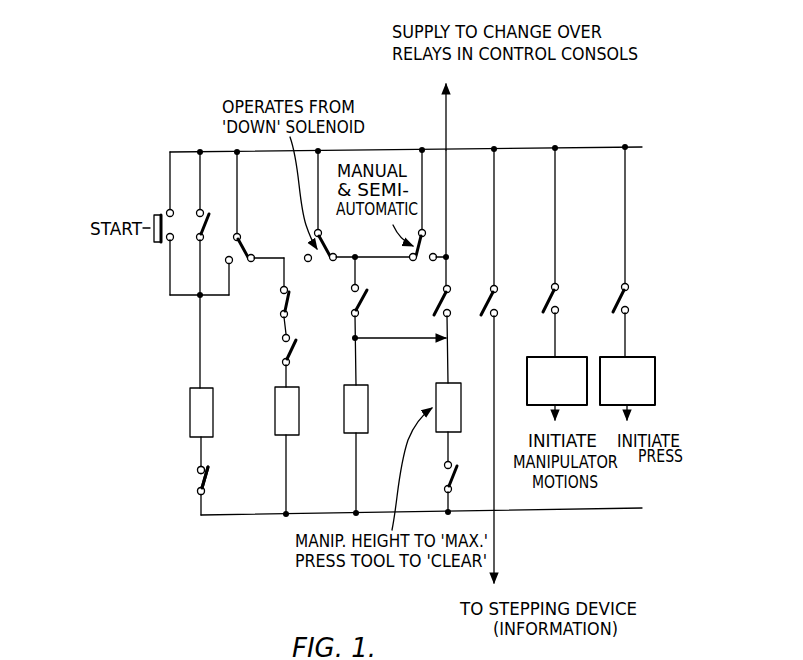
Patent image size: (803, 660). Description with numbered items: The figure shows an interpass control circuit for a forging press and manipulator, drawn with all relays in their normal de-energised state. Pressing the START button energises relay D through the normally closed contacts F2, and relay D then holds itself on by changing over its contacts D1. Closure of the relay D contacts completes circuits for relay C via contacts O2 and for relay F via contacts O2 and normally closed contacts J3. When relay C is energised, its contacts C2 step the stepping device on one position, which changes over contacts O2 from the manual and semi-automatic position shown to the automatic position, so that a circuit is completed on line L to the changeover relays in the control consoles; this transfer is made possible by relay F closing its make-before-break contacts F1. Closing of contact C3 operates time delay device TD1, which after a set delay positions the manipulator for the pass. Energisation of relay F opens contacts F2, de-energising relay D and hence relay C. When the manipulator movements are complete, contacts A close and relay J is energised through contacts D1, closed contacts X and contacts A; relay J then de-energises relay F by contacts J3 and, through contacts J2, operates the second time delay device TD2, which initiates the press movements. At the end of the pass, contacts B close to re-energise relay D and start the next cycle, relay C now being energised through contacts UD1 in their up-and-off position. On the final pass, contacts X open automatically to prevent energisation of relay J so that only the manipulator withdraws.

The contacts B is at (194, 196).
The contacts D1 is at (252, 207).
The contacts X is at (278, 299).
The contacts A is at (283, 350).
The relay J is at (287, 411).
The contacts F2 is at (192, 481).
The contacts UD1 is at (312, 268).
The contacts O2 is at (420, 215).
The line L is at (447, 118).
The contacts F1 is at (433, 301).
The relay F is at (448, 407).
The contacts J3 is at (439, 477).
The relay C is at (356, 409).
The contacts C2 is at (480, 233).
The contact C3 is at (542, 231).
The contacts J2 is at (611, 230).
The time delay device TD1 is at (567, 360).
The second time delay device TD2 is at (630, 358).